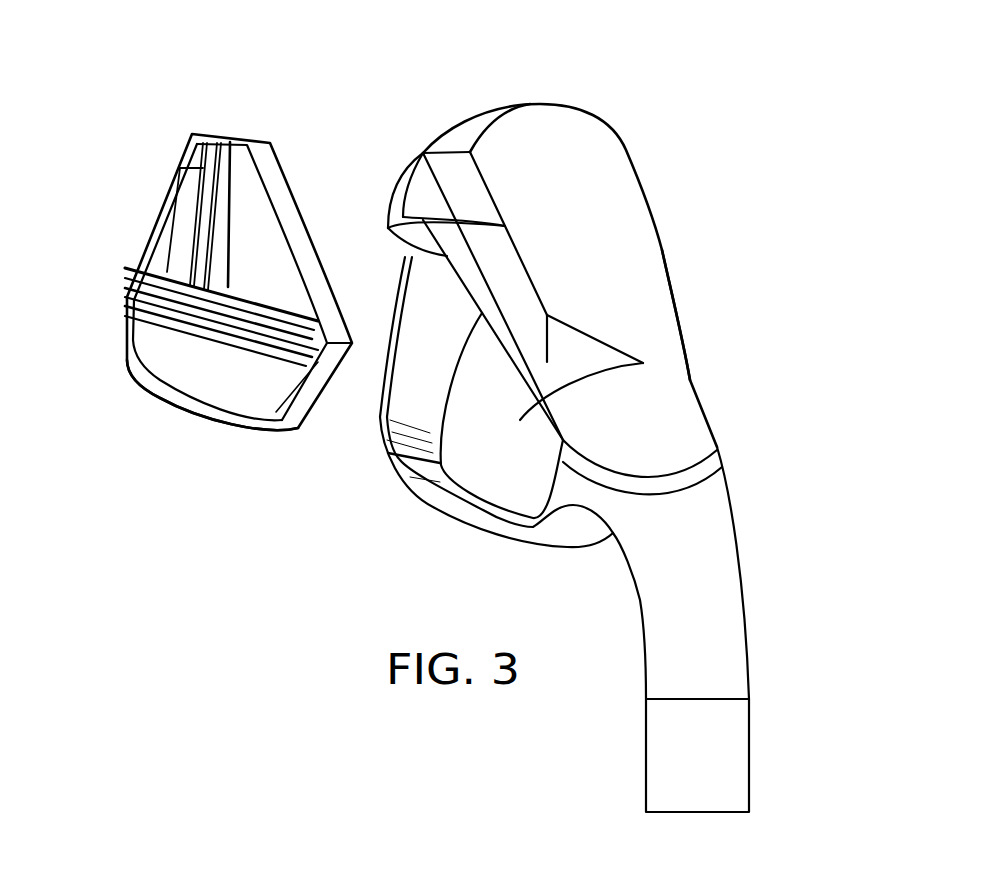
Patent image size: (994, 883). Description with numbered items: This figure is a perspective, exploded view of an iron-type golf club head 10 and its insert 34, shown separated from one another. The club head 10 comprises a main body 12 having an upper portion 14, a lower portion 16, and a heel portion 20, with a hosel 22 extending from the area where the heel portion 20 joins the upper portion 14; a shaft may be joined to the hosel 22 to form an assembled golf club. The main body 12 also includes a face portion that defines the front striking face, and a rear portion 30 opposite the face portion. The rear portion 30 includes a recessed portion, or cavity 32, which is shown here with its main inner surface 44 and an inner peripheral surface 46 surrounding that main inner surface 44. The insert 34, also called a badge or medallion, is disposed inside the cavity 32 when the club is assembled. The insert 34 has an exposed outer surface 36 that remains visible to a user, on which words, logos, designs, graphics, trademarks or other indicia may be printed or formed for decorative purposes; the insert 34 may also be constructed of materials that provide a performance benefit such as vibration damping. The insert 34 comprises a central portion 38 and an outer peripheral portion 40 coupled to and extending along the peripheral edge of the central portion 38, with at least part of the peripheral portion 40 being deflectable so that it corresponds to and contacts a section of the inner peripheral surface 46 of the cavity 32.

The golf club head 10 is at (627, 92).
The main body 12 is at (650, 303).
The upper portion 14 is at (480, 527).
The lower portion 16 is at (523, 107).
The heel portion 20 is at (627, 217).
The hosel 22 is at (742, 622).
The rear portion 30 is at (450, 220).
The cavity 32 is at (487, 438).
The insert 34 is at (268, 118).
The outer surface 36 is at (160, 295).
The central portion 38 is at (173, 362).
The peripheral portion 40 is at (217, 420).
The main inner surface 44 is at (643, 363).
The inner peripheral surface 46 is at (414, 403).